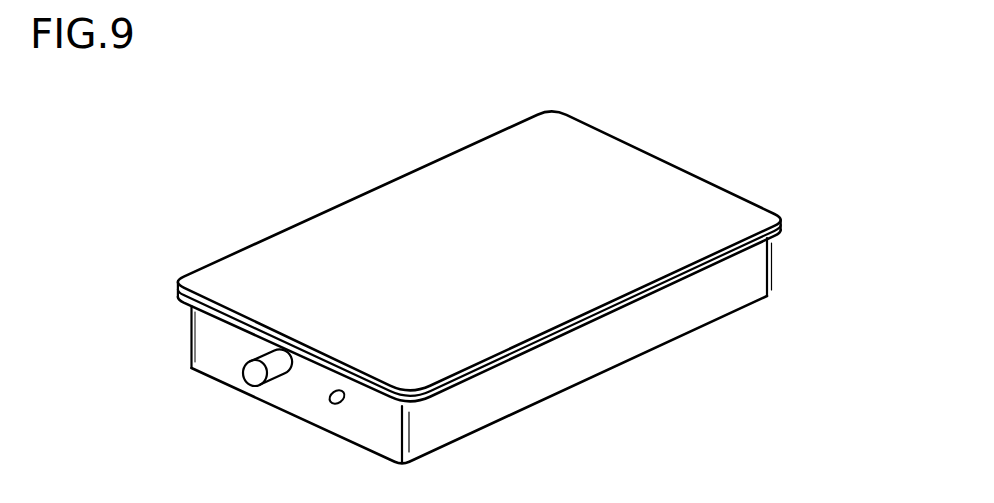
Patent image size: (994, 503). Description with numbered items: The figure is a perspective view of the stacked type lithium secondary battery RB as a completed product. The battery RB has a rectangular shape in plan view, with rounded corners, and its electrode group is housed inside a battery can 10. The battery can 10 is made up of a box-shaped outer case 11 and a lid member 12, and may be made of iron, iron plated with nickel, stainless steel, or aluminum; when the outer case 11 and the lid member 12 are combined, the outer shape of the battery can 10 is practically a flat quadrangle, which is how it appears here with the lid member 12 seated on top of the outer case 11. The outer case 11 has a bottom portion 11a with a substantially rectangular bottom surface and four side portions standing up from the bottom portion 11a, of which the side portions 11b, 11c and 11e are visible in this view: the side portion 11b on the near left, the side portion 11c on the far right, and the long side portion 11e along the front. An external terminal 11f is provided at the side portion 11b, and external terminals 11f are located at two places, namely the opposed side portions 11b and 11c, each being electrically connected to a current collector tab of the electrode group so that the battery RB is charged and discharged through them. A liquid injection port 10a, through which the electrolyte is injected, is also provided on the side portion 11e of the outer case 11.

The stacked type lithium secondary battery RB is at (670, 120).
The battery can 10 is at (108, 237).
The liquid injection port 10a is at (334, 404).
The outer case 11 is at (177, 299).
The bottom portion 11a is at (515, 417).
The side portion 11b is at (218, 347).
The side portion 11c is at (772, 258).
The side portion 11e is at (573, 348).
The external terminal 11f is at (257, 376).
The lid member 12 is at (186, 280).